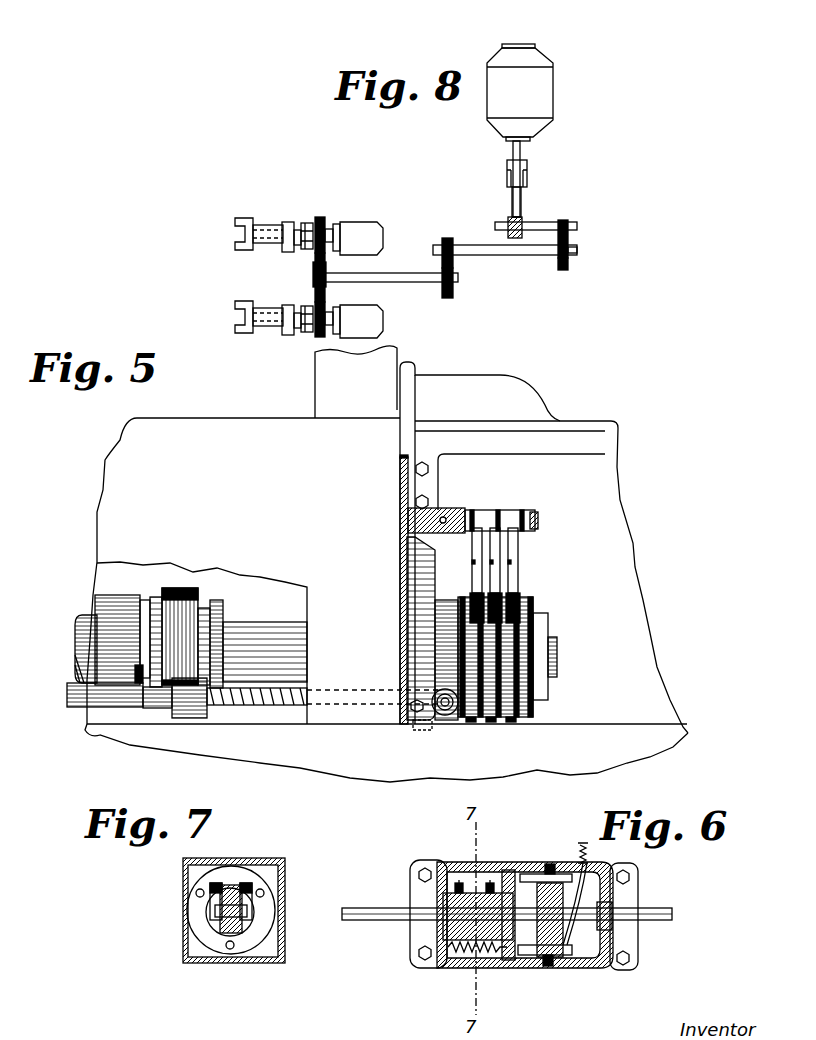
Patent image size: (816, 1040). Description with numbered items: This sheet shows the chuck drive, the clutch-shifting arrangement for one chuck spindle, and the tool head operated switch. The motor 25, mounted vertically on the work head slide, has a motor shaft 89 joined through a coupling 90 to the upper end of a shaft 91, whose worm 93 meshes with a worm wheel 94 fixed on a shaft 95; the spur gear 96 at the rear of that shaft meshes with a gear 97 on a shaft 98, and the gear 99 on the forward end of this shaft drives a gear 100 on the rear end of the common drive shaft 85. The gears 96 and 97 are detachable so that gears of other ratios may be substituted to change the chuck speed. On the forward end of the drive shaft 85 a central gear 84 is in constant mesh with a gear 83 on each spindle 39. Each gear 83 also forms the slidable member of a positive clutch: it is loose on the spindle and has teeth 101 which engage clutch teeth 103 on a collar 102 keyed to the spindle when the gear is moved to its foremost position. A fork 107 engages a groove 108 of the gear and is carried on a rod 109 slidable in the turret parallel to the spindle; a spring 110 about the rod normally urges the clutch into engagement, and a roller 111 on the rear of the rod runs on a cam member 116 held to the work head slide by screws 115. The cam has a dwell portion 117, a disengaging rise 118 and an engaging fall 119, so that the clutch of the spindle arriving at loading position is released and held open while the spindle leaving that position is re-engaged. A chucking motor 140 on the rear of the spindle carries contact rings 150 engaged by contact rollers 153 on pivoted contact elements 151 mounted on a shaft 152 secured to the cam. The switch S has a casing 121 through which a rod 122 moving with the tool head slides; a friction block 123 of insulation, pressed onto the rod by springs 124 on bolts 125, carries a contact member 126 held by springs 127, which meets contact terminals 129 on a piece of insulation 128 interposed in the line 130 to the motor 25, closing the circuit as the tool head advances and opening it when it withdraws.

In FIG. 8, the motor 25 is at (520, 92).
In FIG. 8, the motor shaft 89 is at (520, 150).
In FIG. 8, the coupling 90 is at (530, 168).
In FIG. 8, the shaft 91 is at (510, 198).
In FIG. 8, the worm 93 is at (505, 220).
In FIG. 8, the worm wheel 94 is at (521, 219).
In FIG. 8, the shaft 95 is at (560, 216).
In FIG. 8, the spur gear 96 is at (567, 223).
In FIG. 8, the gear 97 is at (569, 268).
In FIG. 8, the shaft 98 is at (572, 251).
In FIG. 8, the gear 99 is at (447, 239).
In FIG. 8, the gear 100 is at (455, 291).
In FIG. 8, the drive shaft 85 is at (408, 279).
In FIG. 8, the gear 84 is at (313, 269).
In FIG. 8, the gear 83 is at (323, 217).
In FIG. 5, the gear 83 is at (193, 588).
In FIG. 8, the clutch teeth 101 is at (313, 223).
In FIG. 5, the clutch teeth 101 is at (157, 597).
In FIG. 8, the collar 102 is at (290, 222).
In FIG. 5, the collar 102 is at (122, 595).
In FIG. 8, the spindle 39 is at (265, 223).
In FIG. 5, the spindle 39 is at (85, 616).
In FIG. 8, the motor 140 is at (370, 228).
In FIG. 5, the motor 140 is at (552, 694).
In FIG. 5, the groove 108 is at (215, 600).
In FIG. 5, the rod 109 is at (122, 708).
In FIG. 5, the clutch teeth 103 is at (143, 708).
In FIG. 5, the fork 107 is at (205, 719).
In FIG. 5, the spring 110 is at (257, 710).
In FIG. 5, the screws 115 is at (420, 503).
In FIG. 5, the cam member 116 is at (413, 619).
In FIG. 5, the dwell portion 117 is at (433, 584).
In FIG. 5, the rise or disengaging portion 118 is at (416, 544).
In FIG. 5, the fall or engaging portion 119 is at (420, 722).
In FIG. 5, the roller 111 is at (445, 716).
In FIG. 5, the contact rings 150 is at (512, 722).
In FIG. 5, the contact elements 151 is at (497, 578).
In FIG. 5, the shaft 152 is at (536, 523).
In FIG. 5, the contact rollers 153 is at (523, 598).
In FIG. 7, the casing 121 is at (212, 964).
In FIG. 6, the casing 121 is at (447, 964).
In FIG. 7, the rod 122 is at (247, 931).
In FIG. 7, the friction block 123 is at (213, 932).
In FIG. 6, the friction block 123 is at (395, 948).
In FIG. 7, the springs 124 is at (210, 890).
In FIG. 6, the springs 124 is at (440, 895).
In FIG. 7, the bolts 125 is at (205, 908).
In FIG. 6, the bolts 125 is at (443, 884).
In FIG. 6, the contact member 126 is at (522, 877).
In FIG. 6, the springs 127 is at (468, 951).
In FIG. 6, the piece of insulation 128 is at (556, 953).
In FIG. 6, the contact terminals 129 is at (523, 873).
In FIG. 6, the line 130 is at (578, 846).
In FIG. 7, the switch S is at (285, 861).
In FIG. 6, the switch S is at (615, 944).